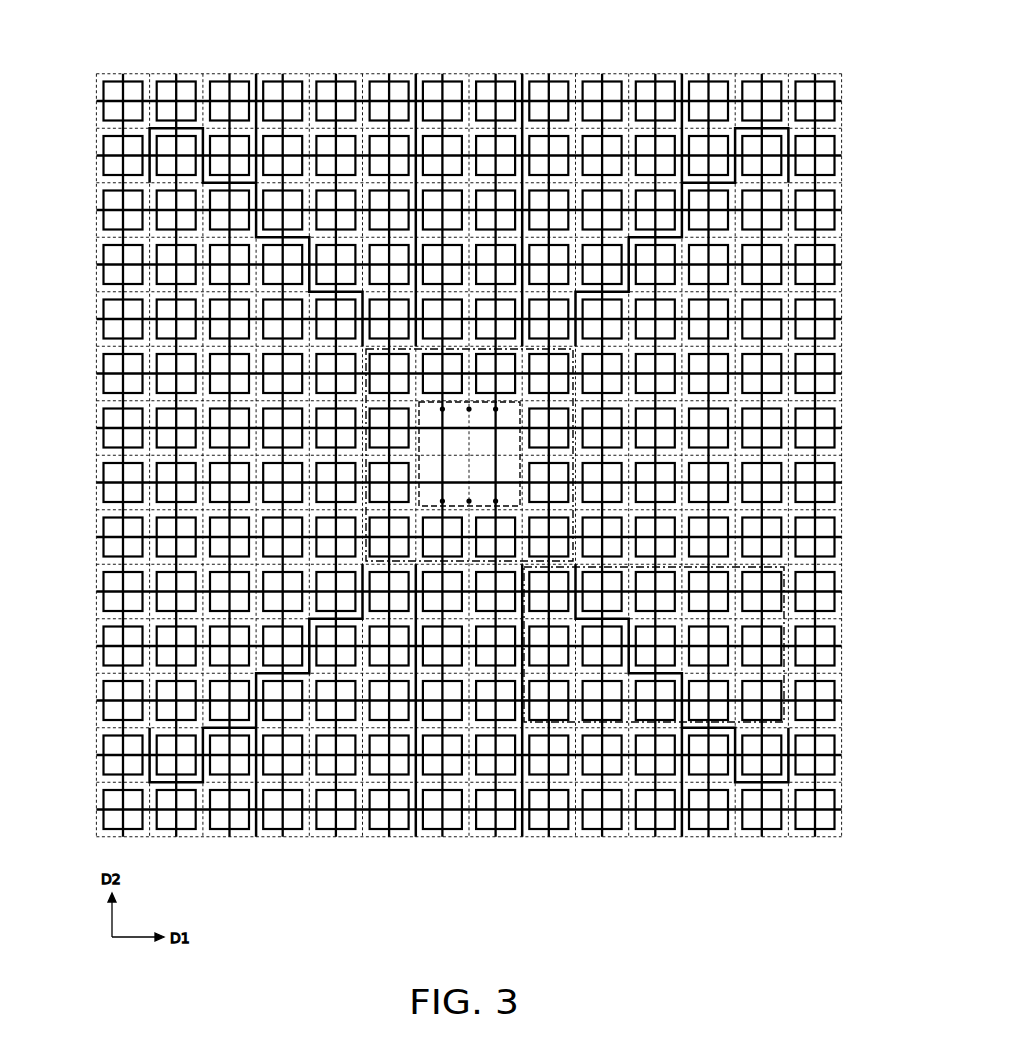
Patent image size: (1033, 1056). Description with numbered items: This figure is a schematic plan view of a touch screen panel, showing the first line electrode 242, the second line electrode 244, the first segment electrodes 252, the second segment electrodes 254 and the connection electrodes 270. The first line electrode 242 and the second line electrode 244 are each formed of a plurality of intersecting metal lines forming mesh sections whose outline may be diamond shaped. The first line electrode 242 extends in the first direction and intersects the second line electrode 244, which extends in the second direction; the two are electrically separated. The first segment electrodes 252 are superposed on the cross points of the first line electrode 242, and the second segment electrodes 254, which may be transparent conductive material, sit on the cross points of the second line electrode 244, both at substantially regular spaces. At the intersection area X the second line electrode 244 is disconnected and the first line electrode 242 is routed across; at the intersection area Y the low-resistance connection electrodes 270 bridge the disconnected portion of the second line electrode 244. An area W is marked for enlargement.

The first line electrode 242 is at (822, 145).
The second line electrode 244 is at (755, 92).
The first segment electrodes 252 is at (114, 148).
The second segment electrodes 254 is at (243, 92).
The connection electrodes 270 is at (490, 496).
The intersection area X is at (573, 413).
The area W is at (782, 572).
The intersection area Y is at (432, 505).